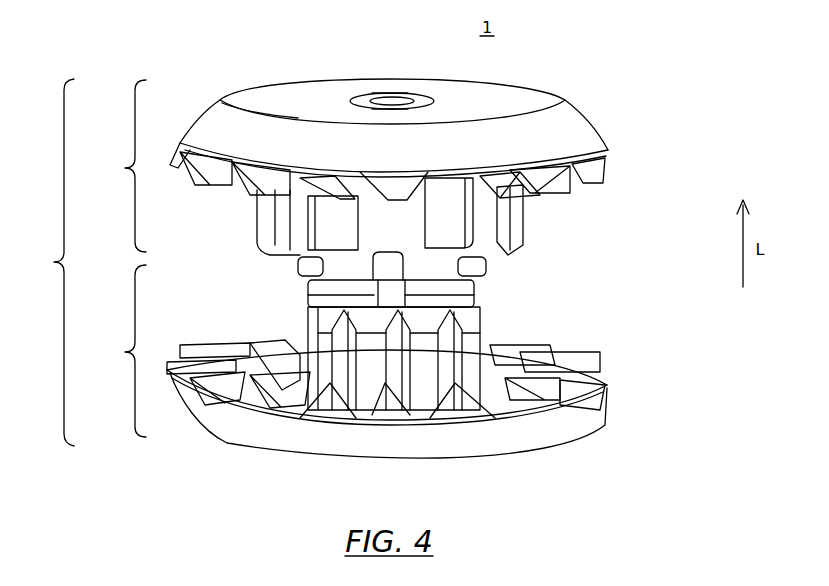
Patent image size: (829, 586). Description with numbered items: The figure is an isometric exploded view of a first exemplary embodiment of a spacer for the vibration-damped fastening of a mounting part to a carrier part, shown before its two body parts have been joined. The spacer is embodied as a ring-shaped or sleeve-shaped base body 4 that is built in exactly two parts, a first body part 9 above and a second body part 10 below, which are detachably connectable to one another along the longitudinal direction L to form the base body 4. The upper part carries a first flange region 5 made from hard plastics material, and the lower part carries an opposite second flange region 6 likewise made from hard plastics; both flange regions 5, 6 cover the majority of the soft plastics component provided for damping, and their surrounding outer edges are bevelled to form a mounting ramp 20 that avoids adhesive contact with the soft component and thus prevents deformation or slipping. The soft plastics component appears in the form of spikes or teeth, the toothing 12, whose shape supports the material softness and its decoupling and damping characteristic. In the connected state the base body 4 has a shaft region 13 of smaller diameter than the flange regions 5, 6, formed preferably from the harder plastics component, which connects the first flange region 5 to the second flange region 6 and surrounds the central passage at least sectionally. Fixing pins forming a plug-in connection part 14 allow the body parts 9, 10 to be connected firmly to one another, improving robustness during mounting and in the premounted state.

The base body 4 is at (51, 262).
The first flange region 5 is at (485, 103).
The second flange region 6 is at (493, 458).
The first body part 9 is at (124, 166).
The second body part 10 is at (122, 351).
The toothing 12 is at (483, 187).
The shaft region 13 is at (345, 214).
The plug-in connection part 14 is at (482, 262).
The mounting ramp 20 is at (560, 137).